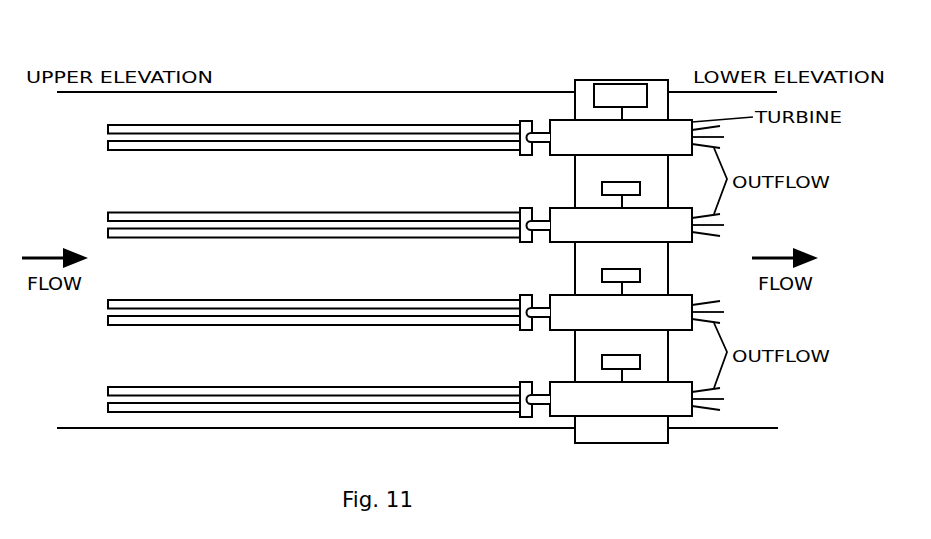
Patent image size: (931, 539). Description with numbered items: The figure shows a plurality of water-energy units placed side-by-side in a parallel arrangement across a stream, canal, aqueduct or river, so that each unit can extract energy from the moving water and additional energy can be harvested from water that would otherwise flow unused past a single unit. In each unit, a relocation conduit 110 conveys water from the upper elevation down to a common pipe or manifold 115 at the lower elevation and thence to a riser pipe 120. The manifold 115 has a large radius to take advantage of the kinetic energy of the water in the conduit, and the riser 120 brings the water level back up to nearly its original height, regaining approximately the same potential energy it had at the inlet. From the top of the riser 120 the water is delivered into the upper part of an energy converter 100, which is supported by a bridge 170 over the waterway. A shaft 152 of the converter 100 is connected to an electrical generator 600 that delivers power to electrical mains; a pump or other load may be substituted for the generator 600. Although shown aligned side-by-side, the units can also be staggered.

The energy converter 100 is at (692, 118).
The relocation conduit 110 is at (108, 127).
The manifold 115 is at (525, 121).
The riser pipe 120 is at (540, 131).
The shaft 152 is at (620, 114).
The bridge 170 is at (649, 80).
The electrical generator 600 is at (608, 84).